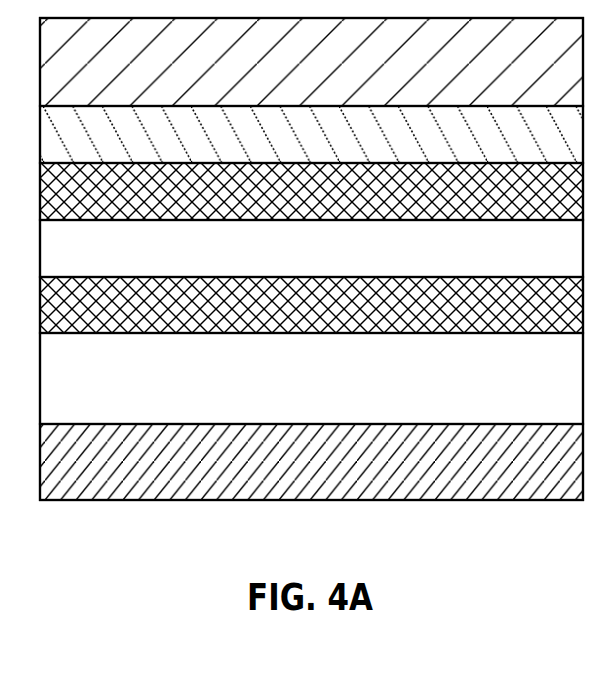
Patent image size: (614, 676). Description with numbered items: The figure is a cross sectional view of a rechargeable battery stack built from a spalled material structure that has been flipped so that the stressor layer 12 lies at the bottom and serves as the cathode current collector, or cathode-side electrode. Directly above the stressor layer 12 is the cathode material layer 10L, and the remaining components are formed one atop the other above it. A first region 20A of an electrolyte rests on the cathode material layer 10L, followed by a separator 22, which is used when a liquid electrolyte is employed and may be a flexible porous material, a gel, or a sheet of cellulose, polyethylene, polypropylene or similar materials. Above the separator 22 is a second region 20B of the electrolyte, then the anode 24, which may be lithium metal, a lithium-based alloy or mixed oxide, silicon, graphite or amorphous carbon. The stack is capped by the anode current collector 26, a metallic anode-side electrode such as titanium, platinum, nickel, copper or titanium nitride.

The anode current collector 26 is at (329, 75).
The anode 24 is at (329, 148).
The second region of an electrolyte 20B is at (339, 206).
The separator 22 is at (329, 260).
The first region of an electrolyte 20A is at (339, 322).
The cathode material layer 10L is at (336, 396).
The stressor layer 12 is at (329, 481).